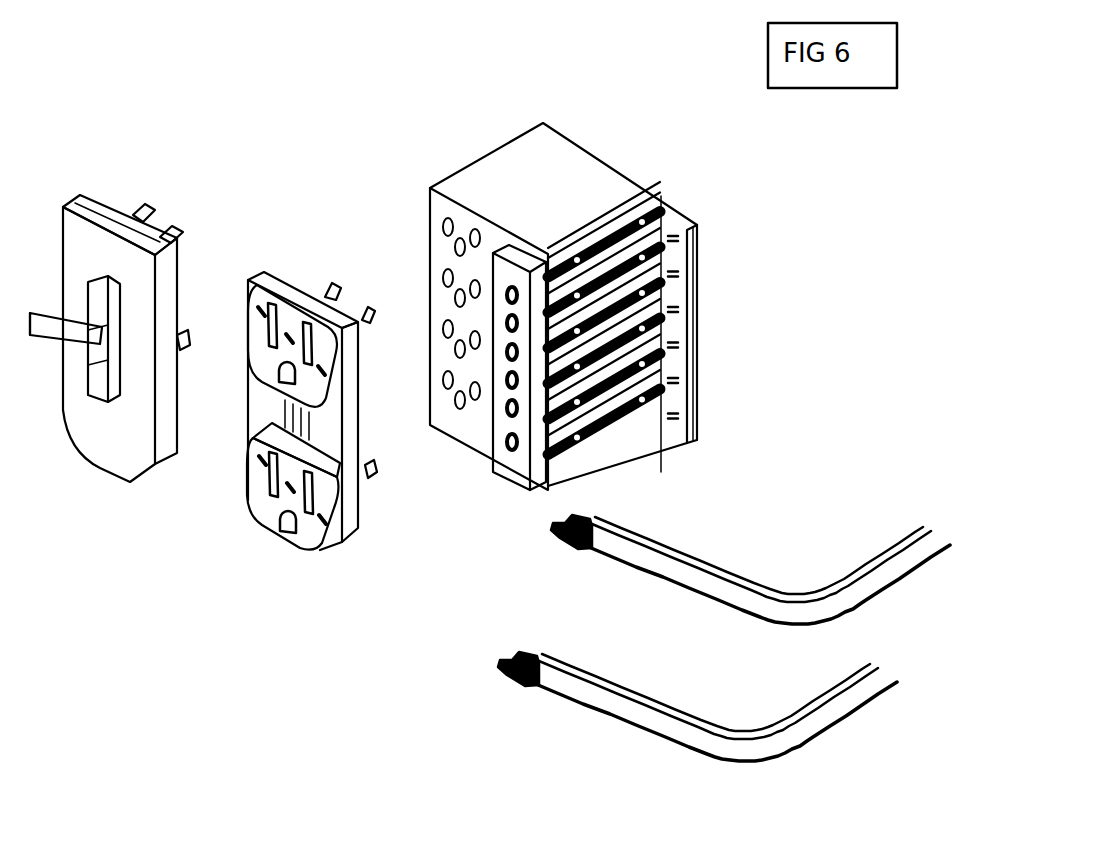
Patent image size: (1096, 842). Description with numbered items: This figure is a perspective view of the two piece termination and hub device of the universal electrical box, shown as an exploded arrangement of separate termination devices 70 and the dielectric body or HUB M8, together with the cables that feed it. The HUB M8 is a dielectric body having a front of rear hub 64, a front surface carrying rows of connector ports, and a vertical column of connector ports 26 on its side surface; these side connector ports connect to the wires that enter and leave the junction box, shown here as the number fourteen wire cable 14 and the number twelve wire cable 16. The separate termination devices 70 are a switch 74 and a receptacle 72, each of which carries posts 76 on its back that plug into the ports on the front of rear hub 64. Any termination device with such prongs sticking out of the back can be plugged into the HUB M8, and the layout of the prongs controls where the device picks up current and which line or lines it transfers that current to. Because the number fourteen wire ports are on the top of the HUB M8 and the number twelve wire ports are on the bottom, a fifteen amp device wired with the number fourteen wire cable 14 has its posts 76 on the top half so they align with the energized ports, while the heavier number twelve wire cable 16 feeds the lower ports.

The dielectric body or HUB M8 is at (557, 188).
The vertical column of connector ports 26 is at (612, 240).
The front of rear hub 64 is at (472, 430).
The separate termination devices 70 is at (283, 272).
The receptacle 72 is at (323, 435).
The switch 74 is at (92, 458).
The posts that plug into the ports on the front of the rear hub 76 is at (370, 476).
The #14 wire cable 14 is at (673, 550).
The #12 wire cable 16 is at (613, 683).